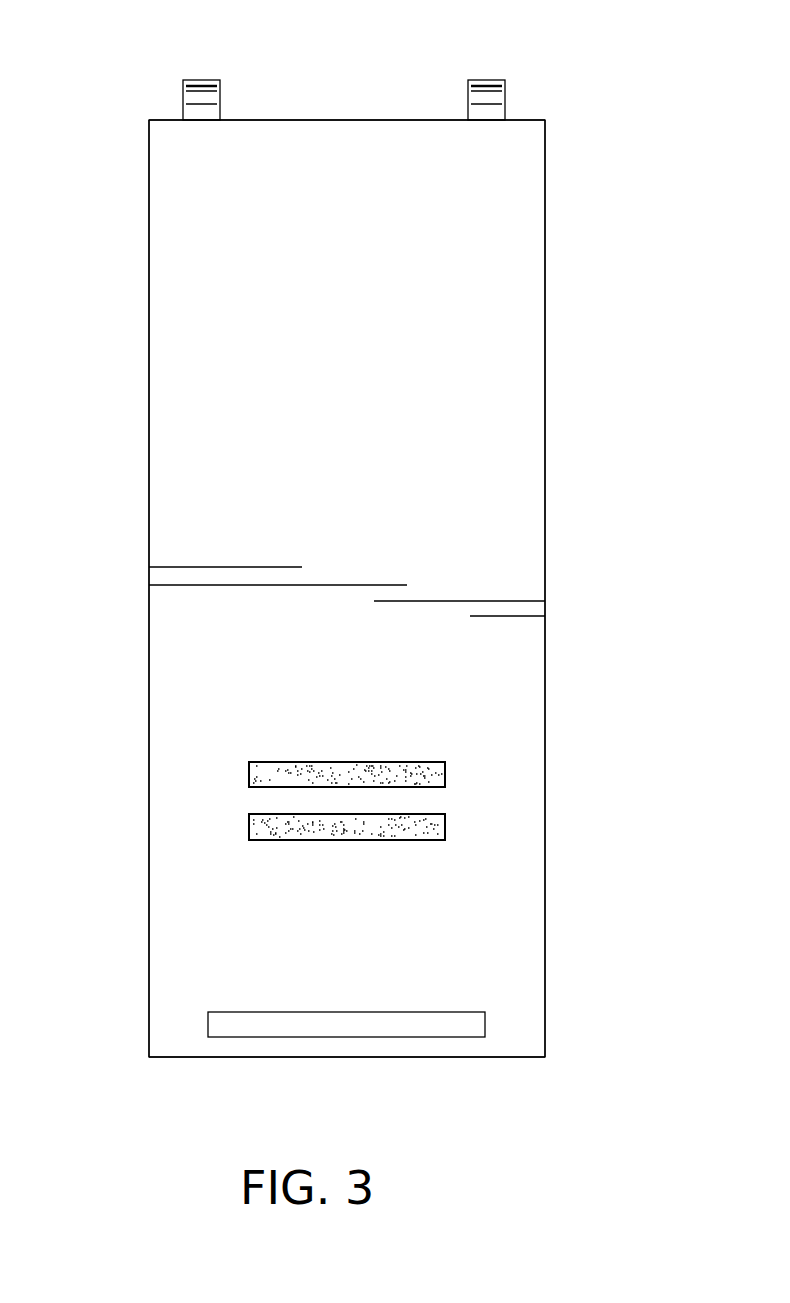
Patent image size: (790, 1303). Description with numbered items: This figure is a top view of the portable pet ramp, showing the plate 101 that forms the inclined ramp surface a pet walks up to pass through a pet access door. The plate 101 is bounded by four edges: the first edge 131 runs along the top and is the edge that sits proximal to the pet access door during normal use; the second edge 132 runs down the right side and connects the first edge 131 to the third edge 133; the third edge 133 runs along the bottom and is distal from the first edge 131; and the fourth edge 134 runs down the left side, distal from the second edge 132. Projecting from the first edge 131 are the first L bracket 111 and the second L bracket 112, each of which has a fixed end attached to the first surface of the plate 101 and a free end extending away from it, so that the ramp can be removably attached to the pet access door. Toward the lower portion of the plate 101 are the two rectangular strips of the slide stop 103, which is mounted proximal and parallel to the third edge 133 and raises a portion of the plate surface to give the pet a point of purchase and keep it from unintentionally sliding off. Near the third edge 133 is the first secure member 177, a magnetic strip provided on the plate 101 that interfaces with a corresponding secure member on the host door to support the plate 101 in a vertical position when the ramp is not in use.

The plate 101 is at (530, 283).
The slide stop 103 is at (445, 772).
The first L bracket 111 is at (197, 100).
The second L bracket 112 is at (493, 105).
The first edge 131 is at (326, 120).
The second edge 132 is at (545, 410).
The third edge 133 is at (423, 1058).
The fourth edge 134 is at (149, 628).
The first secure member 177 is at (475, 1023).